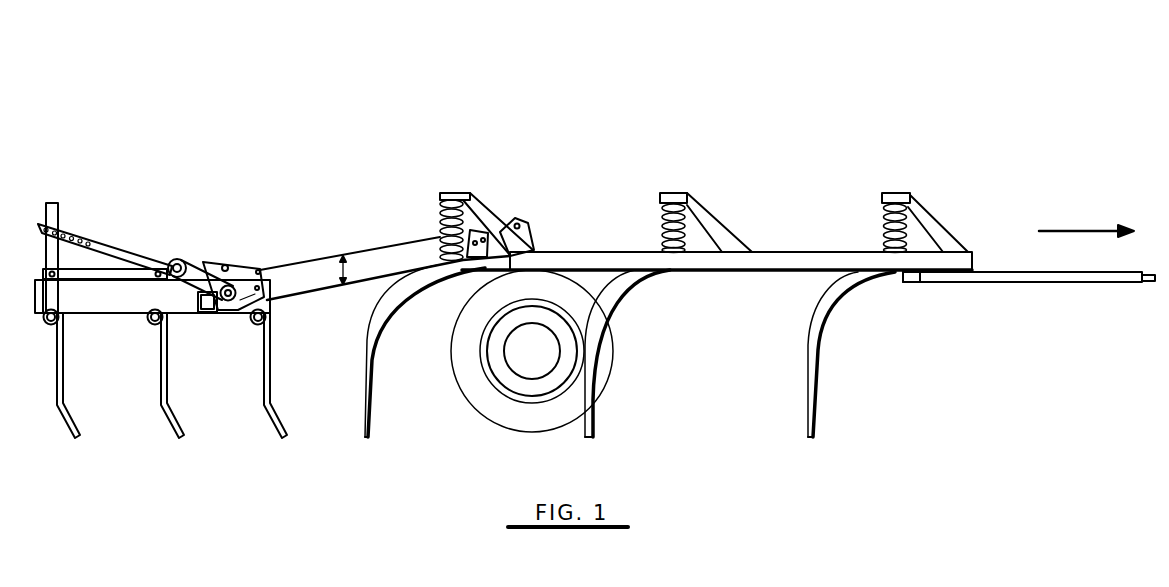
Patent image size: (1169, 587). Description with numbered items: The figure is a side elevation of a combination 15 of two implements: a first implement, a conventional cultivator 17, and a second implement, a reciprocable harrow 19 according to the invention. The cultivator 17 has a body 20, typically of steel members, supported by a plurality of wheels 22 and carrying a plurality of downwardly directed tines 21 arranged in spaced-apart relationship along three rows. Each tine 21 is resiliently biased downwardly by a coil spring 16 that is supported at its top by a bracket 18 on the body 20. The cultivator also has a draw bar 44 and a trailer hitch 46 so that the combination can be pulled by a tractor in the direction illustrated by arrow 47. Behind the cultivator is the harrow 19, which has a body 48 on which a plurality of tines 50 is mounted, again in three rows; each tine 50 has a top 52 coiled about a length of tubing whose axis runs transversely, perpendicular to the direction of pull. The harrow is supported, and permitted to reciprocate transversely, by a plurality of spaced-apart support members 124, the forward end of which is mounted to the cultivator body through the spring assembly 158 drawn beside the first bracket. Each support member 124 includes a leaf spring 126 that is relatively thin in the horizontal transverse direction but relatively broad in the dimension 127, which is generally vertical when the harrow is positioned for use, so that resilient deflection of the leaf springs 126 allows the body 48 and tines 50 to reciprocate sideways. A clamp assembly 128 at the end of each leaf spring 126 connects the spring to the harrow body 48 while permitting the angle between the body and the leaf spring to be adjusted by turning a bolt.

The combination 15 is at (538, 102).
The cultivator 17 is at (771, 180).
The reciprocable harrow 19 is at (249, 228).
The body 20 is at (592, 257).
The coil spring 16 is at (660, 227).
The bracket 18 is at (717, 213).
The tongue spring assembly 158 is at (518, 222).
The tines 21 is at (370, 373).
The wheels 22 is at (486, 394).
The draw bar 44 is at (1066, 275).
The trailer hitch 46 is at (1153, 280).
The arrow 47 is at (1078, 231).
The body 48 is at (125, 298).
The tines 50 is at (63, 376).
The top 52 is at (48, 322).
The support members 124 is at (302, 265).
The leaf spring 126 is at (300, 281).
The dimension 127 is at (346, 263).
The clamp assembly 128 is at (188, 269).